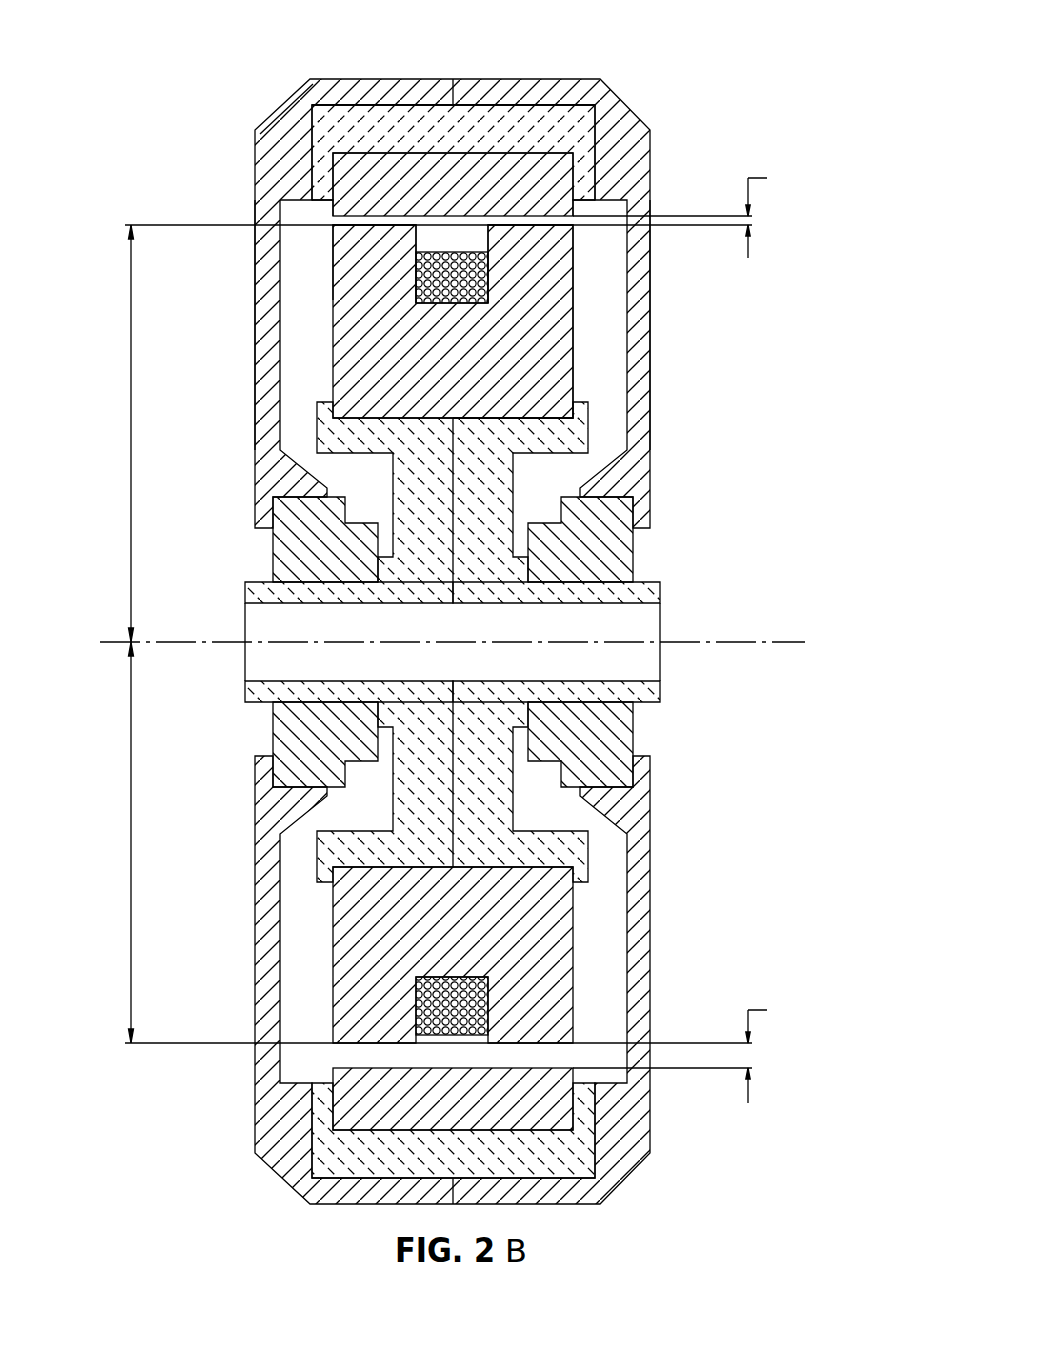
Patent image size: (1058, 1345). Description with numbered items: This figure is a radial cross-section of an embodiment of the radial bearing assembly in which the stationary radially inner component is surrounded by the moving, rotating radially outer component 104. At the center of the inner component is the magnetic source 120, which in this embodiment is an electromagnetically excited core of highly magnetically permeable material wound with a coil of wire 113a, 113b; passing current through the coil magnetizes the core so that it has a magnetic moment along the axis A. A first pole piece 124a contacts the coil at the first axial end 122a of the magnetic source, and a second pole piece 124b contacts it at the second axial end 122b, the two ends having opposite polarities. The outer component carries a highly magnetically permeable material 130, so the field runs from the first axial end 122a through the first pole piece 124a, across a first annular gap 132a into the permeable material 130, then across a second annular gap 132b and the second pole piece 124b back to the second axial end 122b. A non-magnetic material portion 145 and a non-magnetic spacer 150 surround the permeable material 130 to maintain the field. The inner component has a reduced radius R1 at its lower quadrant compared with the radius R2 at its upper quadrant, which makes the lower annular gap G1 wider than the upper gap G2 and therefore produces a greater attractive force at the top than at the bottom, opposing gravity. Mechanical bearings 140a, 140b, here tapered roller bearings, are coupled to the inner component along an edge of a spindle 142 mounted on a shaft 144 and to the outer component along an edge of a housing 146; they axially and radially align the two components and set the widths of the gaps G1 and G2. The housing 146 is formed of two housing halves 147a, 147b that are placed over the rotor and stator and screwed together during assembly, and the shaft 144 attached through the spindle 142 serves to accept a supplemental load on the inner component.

The radially outer component 104 is at (606, 124).
The housing 146 is at (263, 92).
The spacer 150 is at (322, 104).
The non-magnetic material portion 145 is at (521, 135).
The highly magnetically permeable material 130 is at (393, 170).
The first annular gap 132a is at (348, 217).
The second annular gap 132b is at (587, 197).
The first pole piece 124a is at (377, 358).
The second pole piece 124b is at (527, 357).
The first axial end 122a is at (414, 263).
The second axial end 122b is at (489, 267).
The coil of wire 113a is at (909, 134).
The coil of wire 113b is at (861, 867).
The magnetic source 120 is at (500, 378).
The spindle 142 is at (252, 592).
The shaft 144 is at (658, 588).
The mechanical bearing 140a is at (312, 551).
The mechanical bearing 140b is at (593, 551).
The housing half 147a is at (256, 322).
The housing half 147b is at (649, 321).
The axis A is at (788, 640).
The reduced radius R1 is at (131, 848).
The radius R2 is at (131, 431).
The annular gap G1 is at (685, 1050).
The annular gap G2 is at (685, 213).